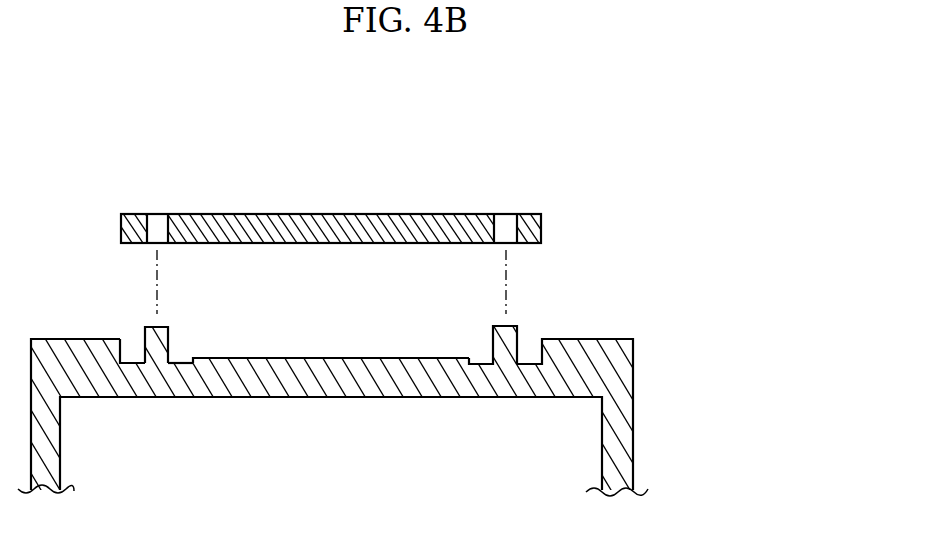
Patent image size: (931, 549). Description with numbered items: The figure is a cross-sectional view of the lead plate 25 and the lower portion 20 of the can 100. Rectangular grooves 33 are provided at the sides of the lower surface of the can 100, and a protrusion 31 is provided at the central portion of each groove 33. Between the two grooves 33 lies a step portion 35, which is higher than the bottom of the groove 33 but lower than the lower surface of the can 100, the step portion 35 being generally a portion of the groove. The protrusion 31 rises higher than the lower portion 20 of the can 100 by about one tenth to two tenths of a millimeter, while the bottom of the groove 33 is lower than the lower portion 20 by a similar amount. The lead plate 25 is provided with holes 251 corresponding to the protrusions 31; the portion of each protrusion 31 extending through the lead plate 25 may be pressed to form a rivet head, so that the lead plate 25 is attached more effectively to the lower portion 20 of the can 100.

The lower portion 20 is at (610, 339).
The lead plate 25 is at (382, 214).
The holes 251 is at (507, 222).
The protrusions 31 is at (170, 337).
The rectangular grooves 33 is at (130, 336).
The step portion 35 is at (371, 358).
The can 100 is at (690, 404).